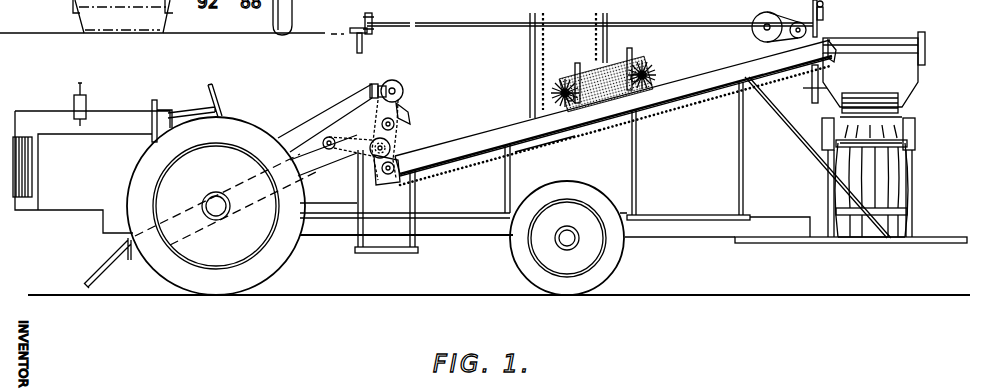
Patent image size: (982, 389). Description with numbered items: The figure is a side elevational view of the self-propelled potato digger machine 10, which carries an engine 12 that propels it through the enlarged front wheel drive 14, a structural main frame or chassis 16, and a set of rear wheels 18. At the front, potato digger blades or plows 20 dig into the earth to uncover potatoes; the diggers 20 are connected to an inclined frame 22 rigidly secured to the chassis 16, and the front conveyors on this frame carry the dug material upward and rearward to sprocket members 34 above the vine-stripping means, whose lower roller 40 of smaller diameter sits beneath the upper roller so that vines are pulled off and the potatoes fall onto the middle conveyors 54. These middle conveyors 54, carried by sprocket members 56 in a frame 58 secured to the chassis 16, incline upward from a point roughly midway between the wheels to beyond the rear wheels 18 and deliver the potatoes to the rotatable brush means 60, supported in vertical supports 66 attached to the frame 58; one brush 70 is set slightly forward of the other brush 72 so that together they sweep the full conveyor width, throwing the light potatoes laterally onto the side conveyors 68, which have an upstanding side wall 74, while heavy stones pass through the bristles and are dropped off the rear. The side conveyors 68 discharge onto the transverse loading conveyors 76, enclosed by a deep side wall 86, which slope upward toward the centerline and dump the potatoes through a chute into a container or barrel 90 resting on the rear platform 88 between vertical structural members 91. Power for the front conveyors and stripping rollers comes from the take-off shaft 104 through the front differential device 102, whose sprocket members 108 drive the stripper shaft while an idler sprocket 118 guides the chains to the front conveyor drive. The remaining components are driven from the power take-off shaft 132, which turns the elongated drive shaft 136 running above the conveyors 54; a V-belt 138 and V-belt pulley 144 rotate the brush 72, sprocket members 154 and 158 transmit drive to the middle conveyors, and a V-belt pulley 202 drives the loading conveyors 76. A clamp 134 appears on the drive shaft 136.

The self-propelled potato digger machine 10 is at (32, 102).
The engine 12 is at (113, 110).
The front wheel drive 14 is at (270, 265).
The main frame or chassis 16 is at (452, 224).
The rear wheels 18 is at (610, 262).
The potato digger blades or plows 20 is at (113, 272).
The inclined frame 22 is at (308, 168).
The sprocket members 34 is at (404, 121).
The lower roller 40 is at (391, 148).
The middle conveyors 54 is at (447, 170).
The sprocket members 56 is at (397, 181).
The conveyor frame 58 is at (492, 133).
The rotatable brush means 60 is at (619, 70).
The vertical supports 66 is at (634, 53).
The side conveyors 68 is at (735, 92).
The brush 70 is at (564, 79).
The brush 72 is at (654, 71).
The upstanding side wall 74 is at (592, 128).
The loading conveyors 76 is at (873, 96).
The upstanding side wall or side frame 86 is at (909, 87).
The rear platform 88 is at (930, 240).
The container or barrel 90 is at (912, 168).
The vertical structural members 91 is at (833, 129).
The front differential device 102 is at (406, 122).
The take-off shaft 104 is at (326, 105).
The sprocket members 108 is at (402, 85).
The idler sprocket 118 is at (322, 133).
The power take-off shaft 132 is at (358, 42).
The clamp 134 is at (372, 17).
The elongated drive shaft 136 is at (511, 22).
The V-belt 138 is at (542, 57).
The V-belt pulley 144 is at (542, 101).
The sprocket members 154 is at (758, 20).
The sprocket members 158 is at (824, 27).
The V-belt pulley 202 is at (812, 88).